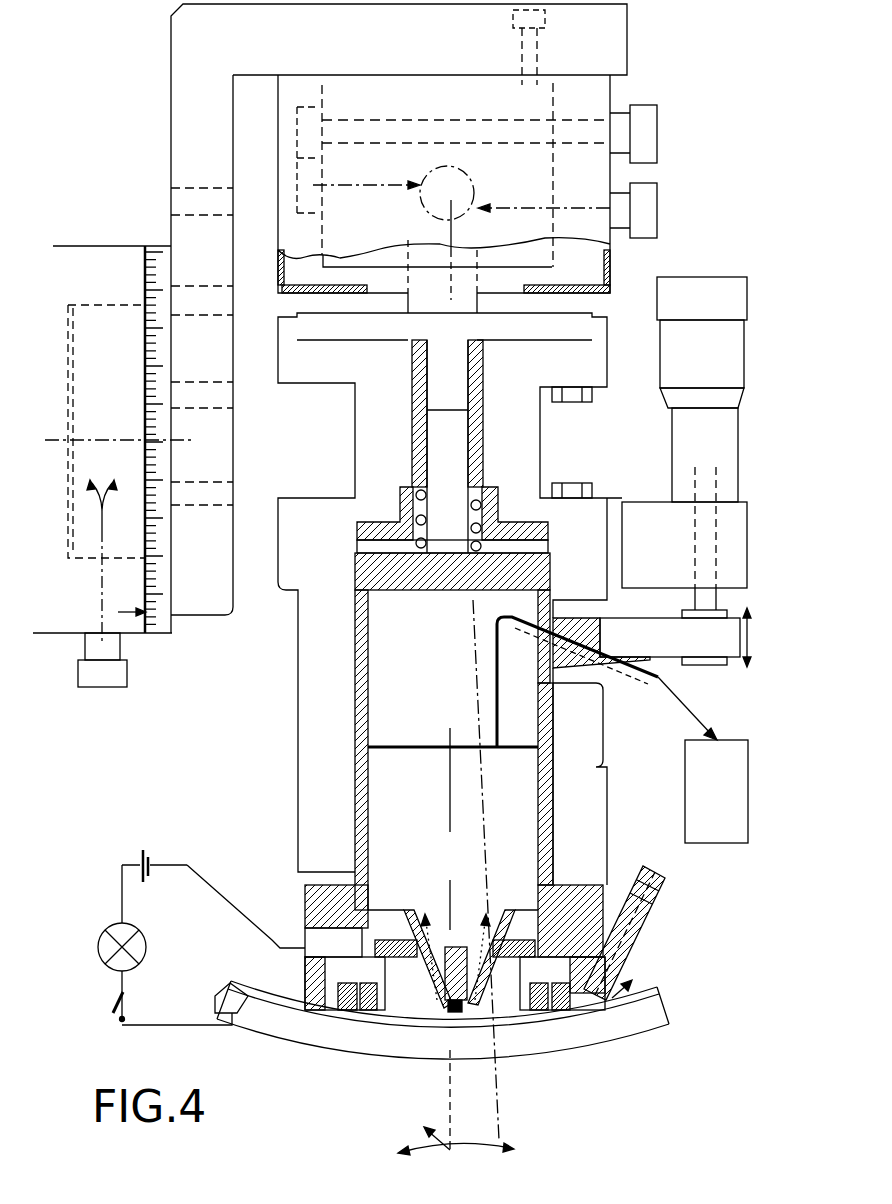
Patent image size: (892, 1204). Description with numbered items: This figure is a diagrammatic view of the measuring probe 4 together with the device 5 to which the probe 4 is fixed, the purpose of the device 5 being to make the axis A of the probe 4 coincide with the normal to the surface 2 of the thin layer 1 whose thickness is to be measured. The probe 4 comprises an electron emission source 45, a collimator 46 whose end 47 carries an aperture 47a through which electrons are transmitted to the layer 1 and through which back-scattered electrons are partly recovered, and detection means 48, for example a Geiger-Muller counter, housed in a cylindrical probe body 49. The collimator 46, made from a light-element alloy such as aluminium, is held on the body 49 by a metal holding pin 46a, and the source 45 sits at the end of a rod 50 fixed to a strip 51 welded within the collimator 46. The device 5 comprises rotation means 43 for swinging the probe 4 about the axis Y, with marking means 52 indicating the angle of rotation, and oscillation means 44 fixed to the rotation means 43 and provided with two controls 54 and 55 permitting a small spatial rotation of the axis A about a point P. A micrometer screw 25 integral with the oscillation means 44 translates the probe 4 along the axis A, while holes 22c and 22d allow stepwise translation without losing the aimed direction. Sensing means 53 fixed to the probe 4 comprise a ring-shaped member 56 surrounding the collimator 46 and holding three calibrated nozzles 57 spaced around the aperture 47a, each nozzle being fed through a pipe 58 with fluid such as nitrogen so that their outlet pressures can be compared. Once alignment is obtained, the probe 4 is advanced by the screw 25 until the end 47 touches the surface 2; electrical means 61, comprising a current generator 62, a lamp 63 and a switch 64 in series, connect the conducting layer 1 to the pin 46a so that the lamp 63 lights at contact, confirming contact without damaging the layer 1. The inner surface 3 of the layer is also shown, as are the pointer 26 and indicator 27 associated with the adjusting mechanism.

The thin layer 1 is at (292, 1005).
The surface of layer 2 is at (242, 988).
The pipe inner surface 3 is at (262, 1045).
The measuring probe 4 is at (358, 754).
The device 5 is at (152, 137).
The holes 22c is at (222, 405).
The holes 22d is at (213, 310).
The translation member 25 is at (672, 455).
The pointer 26 is at (656, 700).
The indicator 27 is at (716, 791).
The swinging means 43 is at (138, 240).
The oscillation means 44 is at (651, 56).
The electron emission source 45 is at (460, 1015).
The collimator 46 is at (437, 1008).
The metal holding pin 46a is at (305, 942).
The end of probe 47 is at (432, 1017).
The aperture 47a is at (447, 1035).
The detection means 48 is at (453, 768).
The probe body 49 is at (365, 778).
The rod 50 is at (473, 955).
The strip 51 is at (437, 955).
The marking means 52 is at (165, 637).
The sensing means 53 is at (640, 950).
The control 54 is at (645, 212).
The control 55 is at (650, 140).
The ring-shaped member 56 is at (638, 1000).
The calibrated nozzles 57 is at (350, 1018).
The pipe 58 is at (656, 868).
The electrical means 61 is at (108, 860).
The current generator 62 is at (143, 862).
The lamp 63 is at (147, 950).
The switch 64 is at (126, 998).
The point P is at (430, 206).
The axis Y' Y is at (123, 431).
The axis of probe A is at (410, 1119).